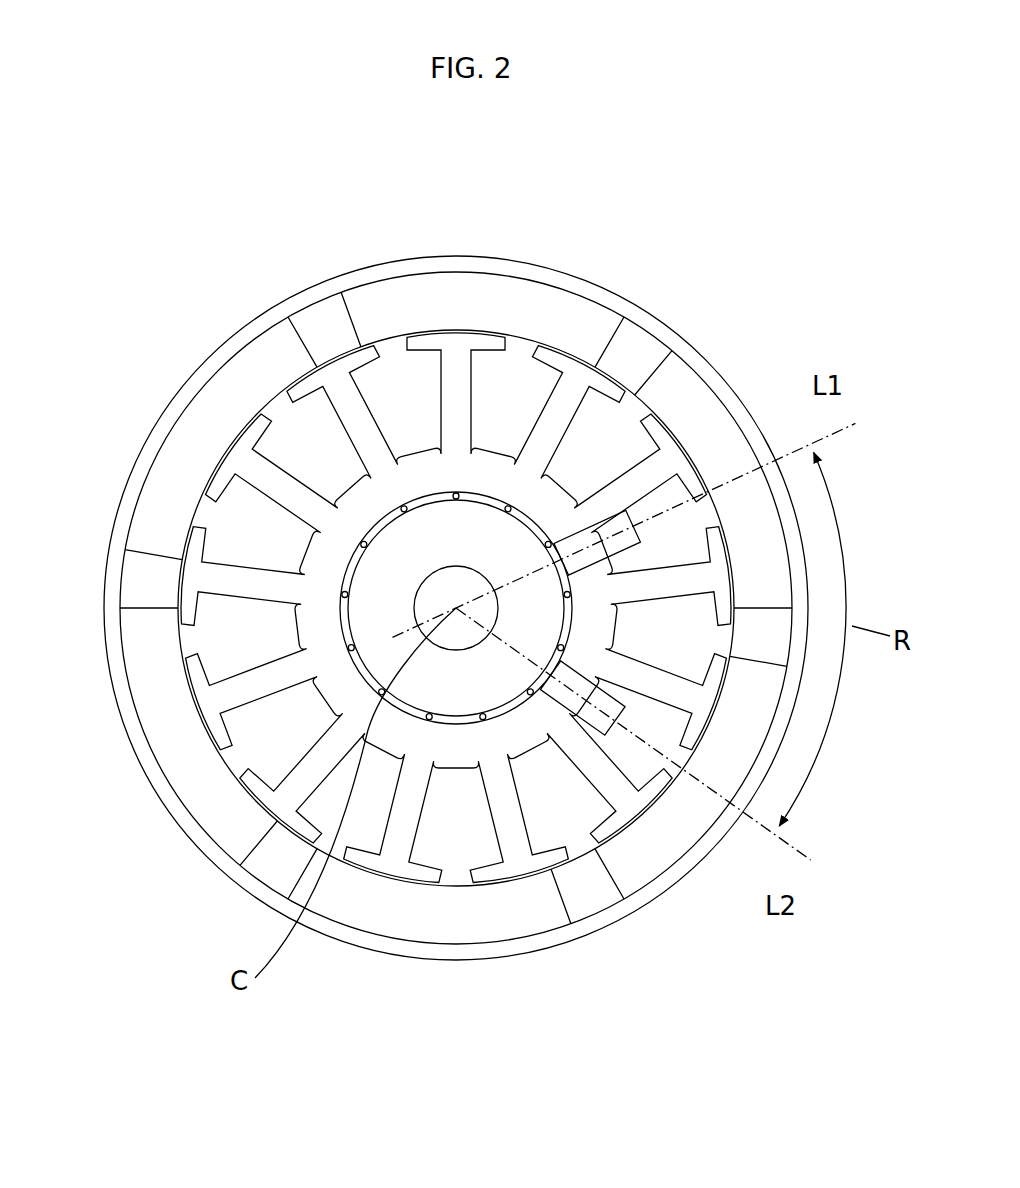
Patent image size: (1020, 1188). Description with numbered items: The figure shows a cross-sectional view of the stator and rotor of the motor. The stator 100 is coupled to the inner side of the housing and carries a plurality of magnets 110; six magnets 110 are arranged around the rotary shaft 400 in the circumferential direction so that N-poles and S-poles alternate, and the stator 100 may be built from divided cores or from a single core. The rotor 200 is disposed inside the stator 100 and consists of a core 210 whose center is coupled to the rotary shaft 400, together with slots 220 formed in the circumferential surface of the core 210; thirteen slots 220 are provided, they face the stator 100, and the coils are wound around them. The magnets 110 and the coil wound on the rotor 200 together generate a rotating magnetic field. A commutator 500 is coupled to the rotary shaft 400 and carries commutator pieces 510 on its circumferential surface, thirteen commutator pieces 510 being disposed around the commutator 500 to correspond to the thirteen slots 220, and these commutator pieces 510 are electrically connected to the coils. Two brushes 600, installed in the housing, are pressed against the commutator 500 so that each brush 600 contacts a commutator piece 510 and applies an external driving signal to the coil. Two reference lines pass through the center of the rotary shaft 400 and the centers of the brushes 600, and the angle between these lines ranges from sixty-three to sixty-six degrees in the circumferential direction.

The stator 100 is at (306, 306).
The magnet 110 is at (398, 300).
The rotor 200 is at (456, 540).
The core 210 is at (456, 540).
The slot 220 is at (570, 393).
The rotary shaft 400 is at (415, 578).
The commutator 500 is at (291, 687).
The commutator piece 510 is at (348, 666).
The brush 600 is at (577, 522).